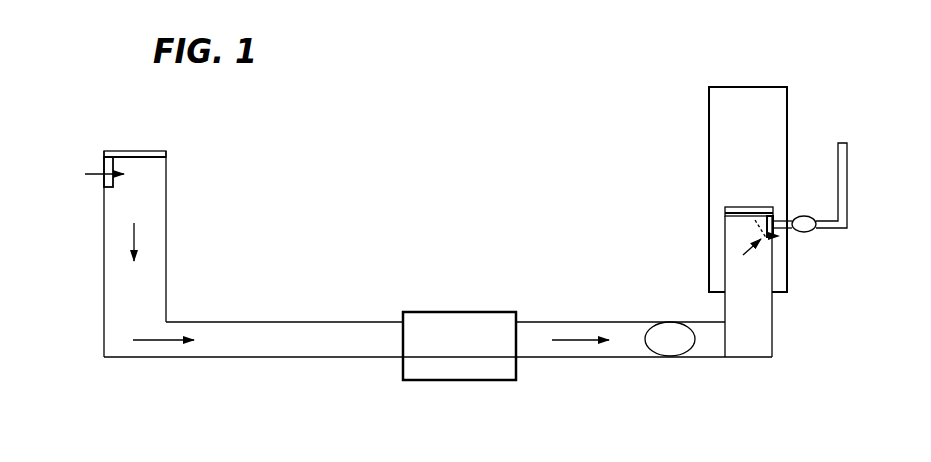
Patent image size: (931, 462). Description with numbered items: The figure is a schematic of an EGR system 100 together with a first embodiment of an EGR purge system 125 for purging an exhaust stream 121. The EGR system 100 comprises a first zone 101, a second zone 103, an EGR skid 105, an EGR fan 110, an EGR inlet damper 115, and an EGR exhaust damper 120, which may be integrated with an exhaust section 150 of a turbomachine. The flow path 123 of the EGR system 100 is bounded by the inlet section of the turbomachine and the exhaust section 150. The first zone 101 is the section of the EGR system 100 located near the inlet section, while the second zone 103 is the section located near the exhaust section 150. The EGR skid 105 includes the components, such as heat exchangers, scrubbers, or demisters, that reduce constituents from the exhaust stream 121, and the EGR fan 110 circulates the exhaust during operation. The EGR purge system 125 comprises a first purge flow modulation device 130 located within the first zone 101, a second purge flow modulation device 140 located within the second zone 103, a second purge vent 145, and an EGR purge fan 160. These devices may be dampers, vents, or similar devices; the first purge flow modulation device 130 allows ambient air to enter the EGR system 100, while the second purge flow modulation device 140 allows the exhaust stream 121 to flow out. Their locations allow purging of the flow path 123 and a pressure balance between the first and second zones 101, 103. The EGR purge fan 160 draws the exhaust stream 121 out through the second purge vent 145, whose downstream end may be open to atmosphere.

The EGR system 100 is at (426, 204).
The first zone 101 is at (92, 292).
The second zone 103 is at (789, 311).
The EGR skid 105 is at (457, 380).
The EGR fan 110 is at (667, 357).
The EGR inlet damper 115 is at (120, 150).
The EGR exhaust damper 120 is at (733, 210).
The exhaust stream 121 is at (471, 355).
The flow path 123 is at (330, 353).
The EGR purge system 125 is at (408, 449).
The first purge flow modulation device 130 is at (104, 161).
The second purge flow modulation device 140 is at (777, 231).
The second purge vent 145 is at (845, 167).
The exhaust section 150 is at (701, 107).
The EGR purge fan 160 is at (810, 231).